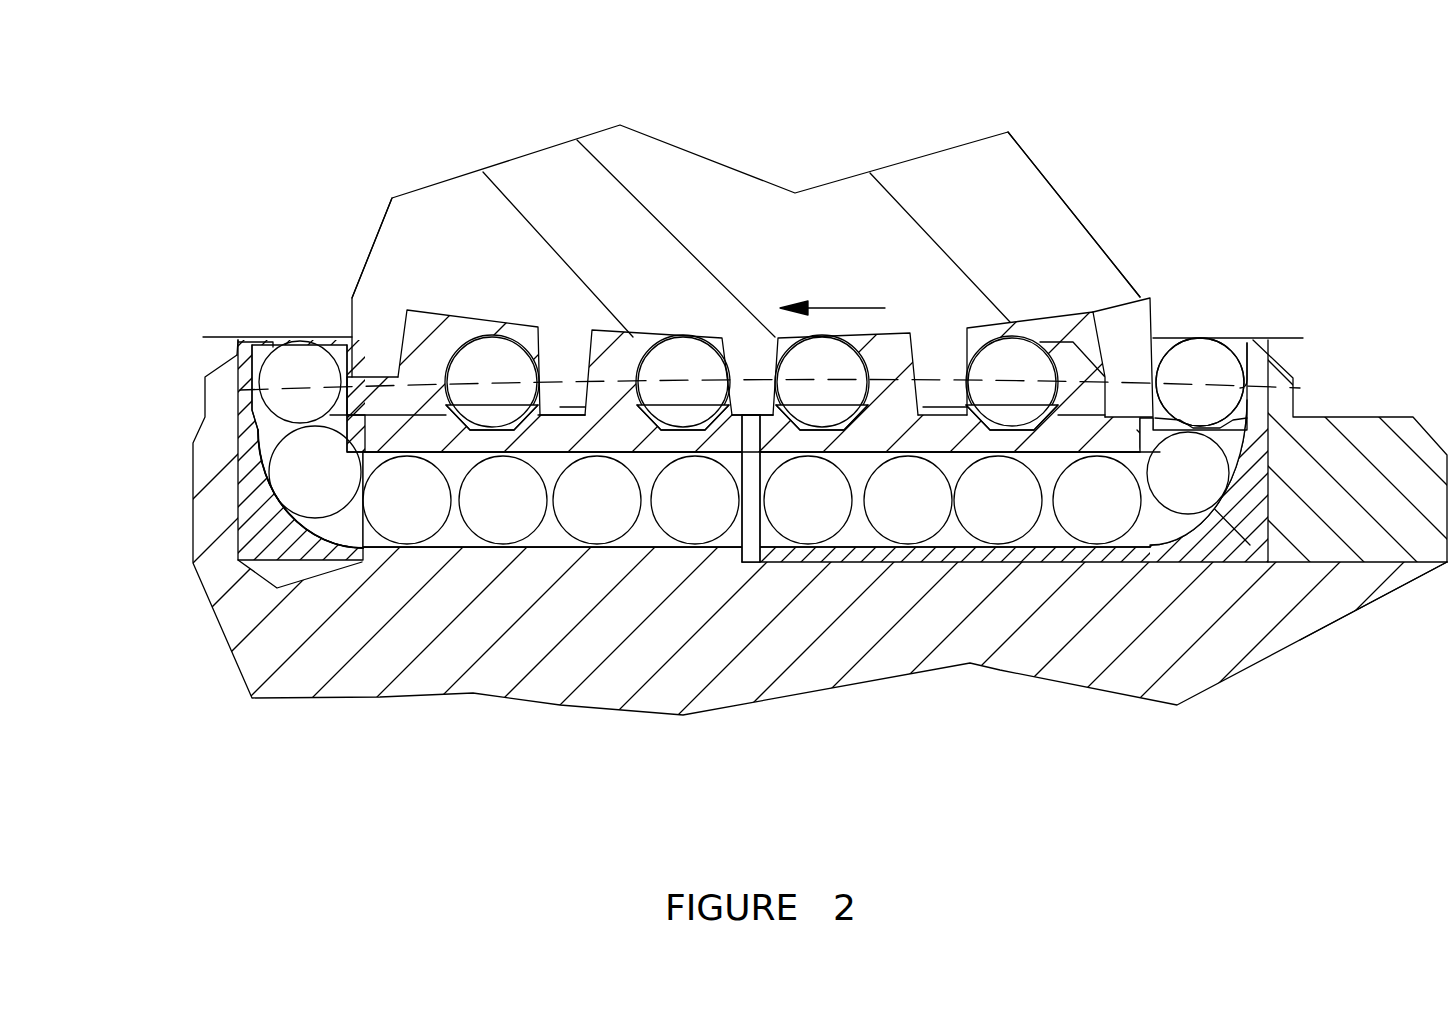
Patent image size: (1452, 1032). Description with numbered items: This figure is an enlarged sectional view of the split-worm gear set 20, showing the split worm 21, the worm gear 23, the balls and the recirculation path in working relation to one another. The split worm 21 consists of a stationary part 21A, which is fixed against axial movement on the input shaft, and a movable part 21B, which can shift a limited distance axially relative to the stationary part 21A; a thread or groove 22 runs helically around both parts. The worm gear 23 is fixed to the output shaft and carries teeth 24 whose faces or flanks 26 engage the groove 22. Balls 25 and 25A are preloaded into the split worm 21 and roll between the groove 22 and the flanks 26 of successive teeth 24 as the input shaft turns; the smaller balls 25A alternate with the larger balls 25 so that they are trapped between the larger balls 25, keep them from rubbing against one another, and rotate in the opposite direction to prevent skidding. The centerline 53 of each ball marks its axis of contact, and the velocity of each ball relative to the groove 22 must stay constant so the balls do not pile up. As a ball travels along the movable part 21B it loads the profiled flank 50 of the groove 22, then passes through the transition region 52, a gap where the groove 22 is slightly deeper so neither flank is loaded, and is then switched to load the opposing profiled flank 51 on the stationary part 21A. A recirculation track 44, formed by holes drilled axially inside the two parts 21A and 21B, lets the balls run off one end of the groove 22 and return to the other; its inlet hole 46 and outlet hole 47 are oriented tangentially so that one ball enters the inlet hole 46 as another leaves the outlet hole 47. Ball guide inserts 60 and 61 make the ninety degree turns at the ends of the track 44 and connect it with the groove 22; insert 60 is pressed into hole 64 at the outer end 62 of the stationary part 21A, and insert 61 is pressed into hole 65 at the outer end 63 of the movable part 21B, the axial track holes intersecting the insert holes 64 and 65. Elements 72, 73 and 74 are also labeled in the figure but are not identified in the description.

The split-worm gear set 20 is at (330, 282).
The split worm 21 is at (433, 338).
The stationary part 21A is at (630, 338).
The movable part 21B is at (893, 345).
The thread or groove 22 is at (947, 413).
The worm gear 23 is at (1100, 238).
The teeth 24 is at (1128, 320).
The balls 25 is at (922, 550).
The smaller balls 25A is at (827, 562).
The flanks 26 is at (985, 335).
The recirculation track 44 is at (550, 550).
The inlet hole 46 is at (340, 353).
The outlet hole 47 is at (1225, 338).
The profiled flank 50 is at (1030, 262).
The opposing profiled flank 51 is at (708, 348).
The transition region 52 is at (740, 562).
The centerline 53 is at (370, 360).
The ball guide insert 60 is at (233, 498).
The ball guide insert 61 is at (1270, 418).
The outer end 62 is at (278, 432).
The outer end 63 is at (1207, 563).
The insert hole 64 is at (290, 573).
The insert hole 65 is at (1233, 674).
The left flange 72 is at (243, 335).
The lip 73 is at (247, 337).
The left ring 74 is at (258, 365).